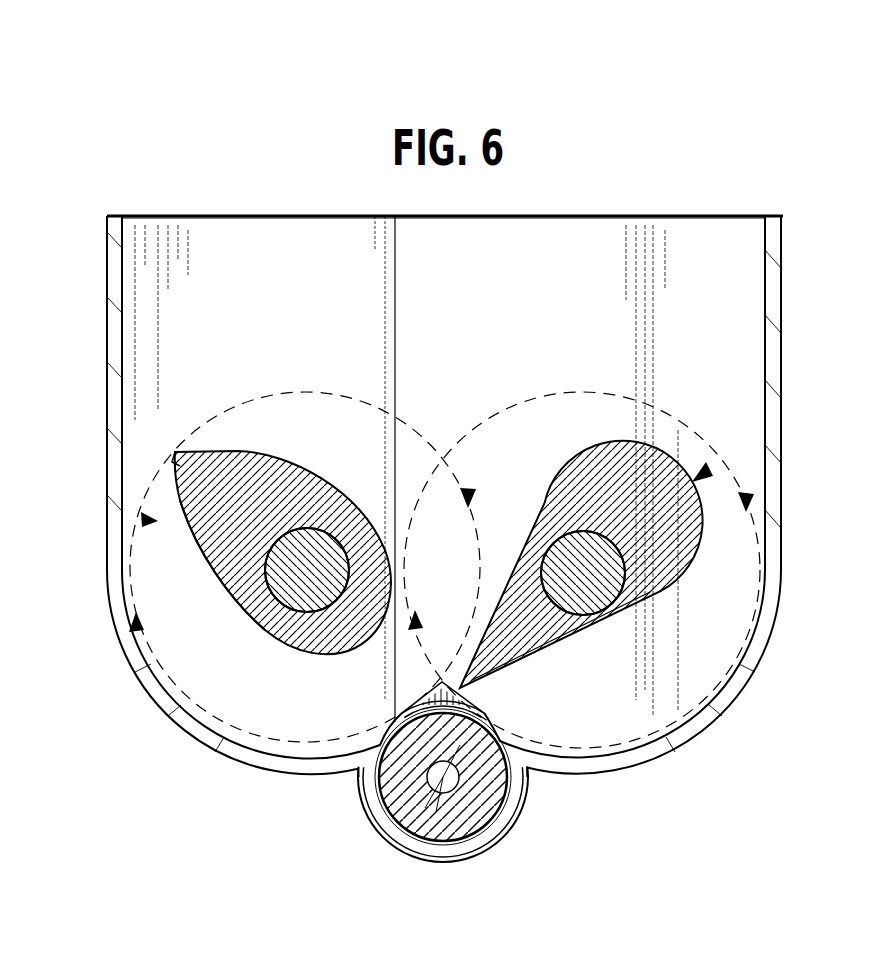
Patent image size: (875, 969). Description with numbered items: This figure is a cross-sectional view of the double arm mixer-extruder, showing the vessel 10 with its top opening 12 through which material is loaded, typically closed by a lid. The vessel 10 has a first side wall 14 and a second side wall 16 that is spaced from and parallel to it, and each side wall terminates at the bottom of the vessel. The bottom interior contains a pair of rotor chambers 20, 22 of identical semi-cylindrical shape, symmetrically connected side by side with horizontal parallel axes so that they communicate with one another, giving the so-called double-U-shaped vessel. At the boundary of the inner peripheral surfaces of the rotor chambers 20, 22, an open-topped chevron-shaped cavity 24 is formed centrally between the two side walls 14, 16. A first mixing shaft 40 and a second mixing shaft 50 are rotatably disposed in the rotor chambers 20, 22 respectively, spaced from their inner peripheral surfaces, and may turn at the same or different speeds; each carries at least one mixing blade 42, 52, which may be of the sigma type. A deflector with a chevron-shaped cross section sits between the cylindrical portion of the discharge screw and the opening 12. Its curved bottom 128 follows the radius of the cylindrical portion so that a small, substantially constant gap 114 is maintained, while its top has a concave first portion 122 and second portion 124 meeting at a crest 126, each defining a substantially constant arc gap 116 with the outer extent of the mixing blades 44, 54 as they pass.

The vessel 10 is at (778, 118).
The opening 12 is at (697, 245).
The first side wall 14 is at (102, 272).
The second side wall 16 is at (784, 292).
The rotor chamber 20 is at (707, 470).
The rotor chamber 22 is at (146, 516).
The chevron-shaped cavity 24 is at (400, 828).
The first mixing shaft 40 is at (645, 546).
The mixing blade 42 is at (650, 565).
The mixing blade 44 is at (455, 688).
The second mixing shaft 50 is at (238, 522).
The mixing blade 52 is at (226, 592).
The mixing blade 54 is at (180, 450).
The gap 114 is at (490, 805).
The arc gap 116 is at (590, 720).
The first portion 122 is at (540, 655).
The second portion 124 is at (435, 690).
The crest 126 is at (395, 690).
The bottom of the deflector 128 is at (372, 795).